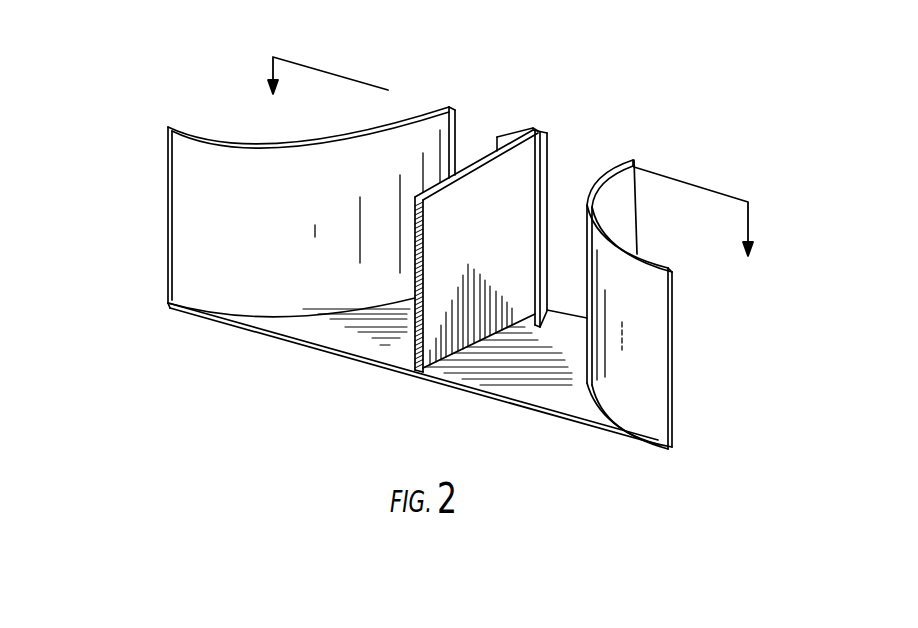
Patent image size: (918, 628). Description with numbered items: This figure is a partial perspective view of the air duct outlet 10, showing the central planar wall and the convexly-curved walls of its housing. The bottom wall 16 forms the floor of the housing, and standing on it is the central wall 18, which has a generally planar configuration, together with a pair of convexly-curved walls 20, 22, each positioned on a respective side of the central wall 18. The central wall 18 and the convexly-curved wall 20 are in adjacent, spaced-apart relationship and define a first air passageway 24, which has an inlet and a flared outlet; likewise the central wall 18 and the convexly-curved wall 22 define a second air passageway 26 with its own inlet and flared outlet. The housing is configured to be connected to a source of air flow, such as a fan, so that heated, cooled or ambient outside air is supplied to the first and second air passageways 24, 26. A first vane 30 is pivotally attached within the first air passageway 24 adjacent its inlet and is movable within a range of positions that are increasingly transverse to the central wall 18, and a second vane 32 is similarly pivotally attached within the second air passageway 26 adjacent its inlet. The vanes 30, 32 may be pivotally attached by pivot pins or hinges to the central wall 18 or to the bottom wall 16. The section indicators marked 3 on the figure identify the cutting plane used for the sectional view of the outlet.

The air duct outlet 10 is at (700, 130).
The section line of FIG. 3 is at (509, 177).
The bottom wall 16 is at (347, 338).
The central wall 18 is at (453, 303).
The convexly-curved wall 20 is at (673, 355).
The convexly-curved wall 22 is at (168, 238).
The first air passageway 24 is at (567, 267).
The second air passageway 26 is at (358, 213).
The first vane 30 is at (545, 182).
The second vane 32 is at (514, 136).